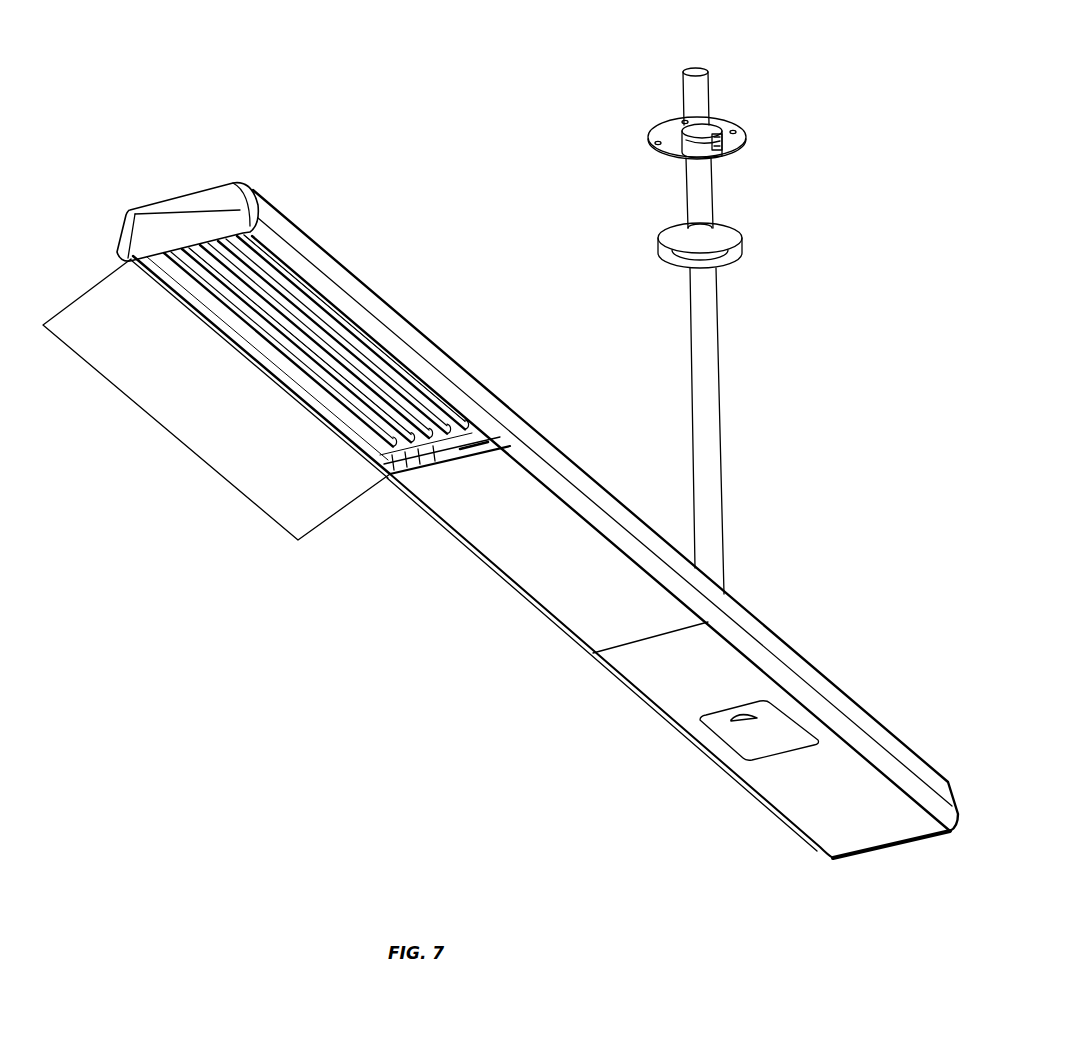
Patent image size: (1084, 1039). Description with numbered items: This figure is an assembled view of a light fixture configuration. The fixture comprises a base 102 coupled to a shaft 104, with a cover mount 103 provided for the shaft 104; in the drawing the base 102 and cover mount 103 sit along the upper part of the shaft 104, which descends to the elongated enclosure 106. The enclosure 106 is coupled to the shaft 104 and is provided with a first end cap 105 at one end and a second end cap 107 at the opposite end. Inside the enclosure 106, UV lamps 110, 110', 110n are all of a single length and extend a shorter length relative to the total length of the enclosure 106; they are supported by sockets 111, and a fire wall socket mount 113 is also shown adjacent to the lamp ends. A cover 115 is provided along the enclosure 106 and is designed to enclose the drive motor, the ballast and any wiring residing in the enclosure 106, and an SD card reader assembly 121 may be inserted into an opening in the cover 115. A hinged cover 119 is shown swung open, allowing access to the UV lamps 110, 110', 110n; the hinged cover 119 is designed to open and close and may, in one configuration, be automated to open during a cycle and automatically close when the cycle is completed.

The base 102 is at (742, 148).
The cover mount 103 is at (725, 267).
The shaft 104 is at (708, 93).
The first end cap 105 is at (197, 203).
The enclosure 106 is at (757, 627).
The second end cap 107 is at (878, 860).
The UV lamp 110 is at (328, 341).
The UV lamp 110' is at (300, 341).
The UV lamp 110n is at (354, 328).
The socket 111 is at (450, 437).
The fire wall socket mount 113 is at (413, 452).
The cover 115 is at (540, 573).
The hinged cover 119 is at (277, 497).
The SD card reader assembly 121 is at (747, 750).